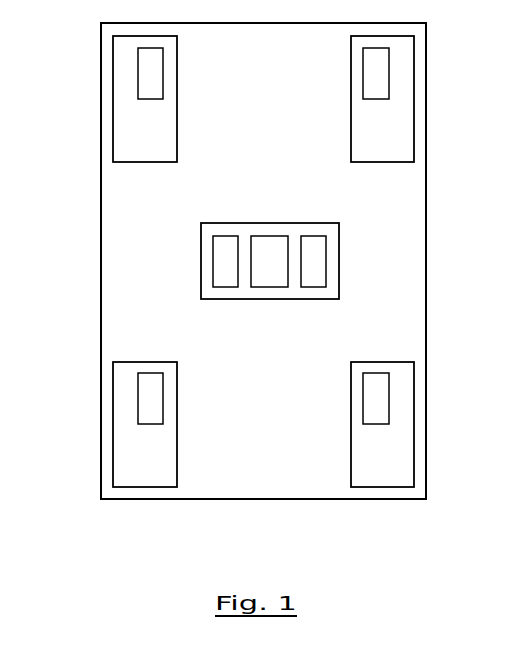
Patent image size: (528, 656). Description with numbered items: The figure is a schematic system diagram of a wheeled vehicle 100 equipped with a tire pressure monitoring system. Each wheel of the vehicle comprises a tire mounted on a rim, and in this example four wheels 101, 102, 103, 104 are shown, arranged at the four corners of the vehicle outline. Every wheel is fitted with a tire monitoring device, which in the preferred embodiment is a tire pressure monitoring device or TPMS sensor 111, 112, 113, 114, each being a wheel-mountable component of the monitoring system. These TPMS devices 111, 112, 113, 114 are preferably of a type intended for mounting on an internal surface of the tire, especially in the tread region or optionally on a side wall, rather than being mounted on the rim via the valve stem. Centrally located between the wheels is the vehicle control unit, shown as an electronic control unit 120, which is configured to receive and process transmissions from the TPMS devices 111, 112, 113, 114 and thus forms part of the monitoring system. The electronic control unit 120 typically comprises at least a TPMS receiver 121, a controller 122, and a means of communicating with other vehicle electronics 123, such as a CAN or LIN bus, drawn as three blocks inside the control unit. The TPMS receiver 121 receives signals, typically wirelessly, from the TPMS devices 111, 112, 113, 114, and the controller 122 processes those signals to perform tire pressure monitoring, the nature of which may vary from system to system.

The wheeled vehicle 100 is at (430, 233).
The wheel 101 is at (127, 73).
The wheel 102 is at (402, 73).
The wheel 103 is at (127, 448).
The wheel 104 is at (401, 448).
The tire pressure monitoring device 111 is at (152, 86).
The tire pressure monitoring device 112 is at (376, 86).
The tire pressure monitoring device 113 is at (152, 385).
The tire pressure monitoring device 114 is at (376, 398).
The electronic control unit 120 is at (200, 273).
The TPMS receiver 121 is at (226, 247).
The controller 122 is at (276, 247).
The means of communicating with other vehicle electronics 123 is at (313, 247).